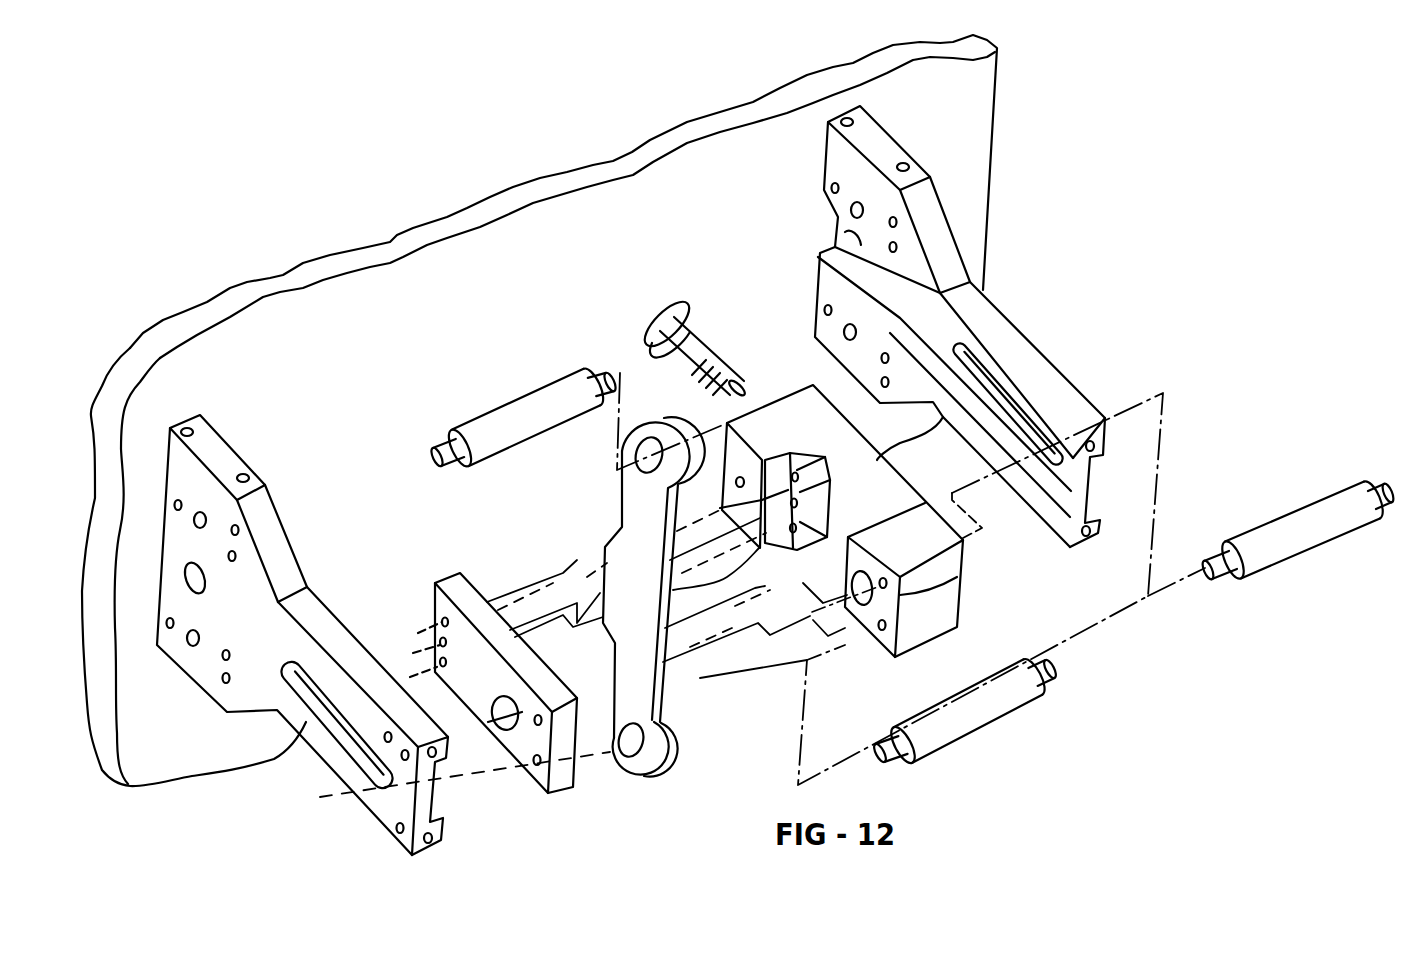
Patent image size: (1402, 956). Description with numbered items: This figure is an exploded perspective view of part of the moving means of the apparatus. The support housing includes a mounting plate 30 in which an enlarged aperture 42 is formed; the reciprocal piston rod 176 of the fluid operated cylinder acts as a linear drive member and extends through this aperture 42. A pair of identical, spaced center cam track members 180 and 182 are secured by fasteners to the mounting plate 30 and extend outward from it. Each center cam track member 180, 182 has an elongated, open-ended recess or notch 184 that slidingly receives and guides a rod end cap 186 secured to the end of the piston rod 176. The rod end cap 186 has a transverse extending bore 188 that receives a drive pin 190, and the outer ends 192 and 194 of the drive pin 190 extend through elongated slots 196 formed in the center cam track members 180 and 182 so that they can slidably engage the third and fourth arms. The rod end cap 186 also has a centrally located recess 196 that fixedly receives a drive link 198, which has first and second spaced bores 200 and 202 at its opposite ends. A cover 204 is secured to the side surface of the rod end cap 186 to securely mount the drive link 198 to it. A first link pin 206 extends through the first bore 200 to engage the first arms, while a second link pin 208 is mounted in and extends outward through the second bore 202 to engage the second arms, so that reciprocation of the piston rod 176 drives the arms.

The mounting plate 30 is at (973, 132).
The aperture 42 is at (653, 327).
The piston rod 176 is at (737, 388).
The center cam track member 180 is at (1033, 362).
The center cam track member 182 is at (287, 563).
The recess or notch 184 is at (430, 803).
The rod end cap 186 is at (947, 605).
The transverse bore 188 is at (960, 571).
The drive pin 190 is at (1310, 533).
The outer end of drive pin 192 is at (1223, 570).
The outer end of drive pin 194 is at (1378, 490).
The elongated slot 196 is at (327, 718).
The drive link 198 is at (632, 527).
The first bore 200 is at (653, 450).
The second bore 202 is at (640, 773).
The cover 204 is at (540, 775).
The first link pin 206 is at (527, 410).
The second link pin 208 is at (965, 723).